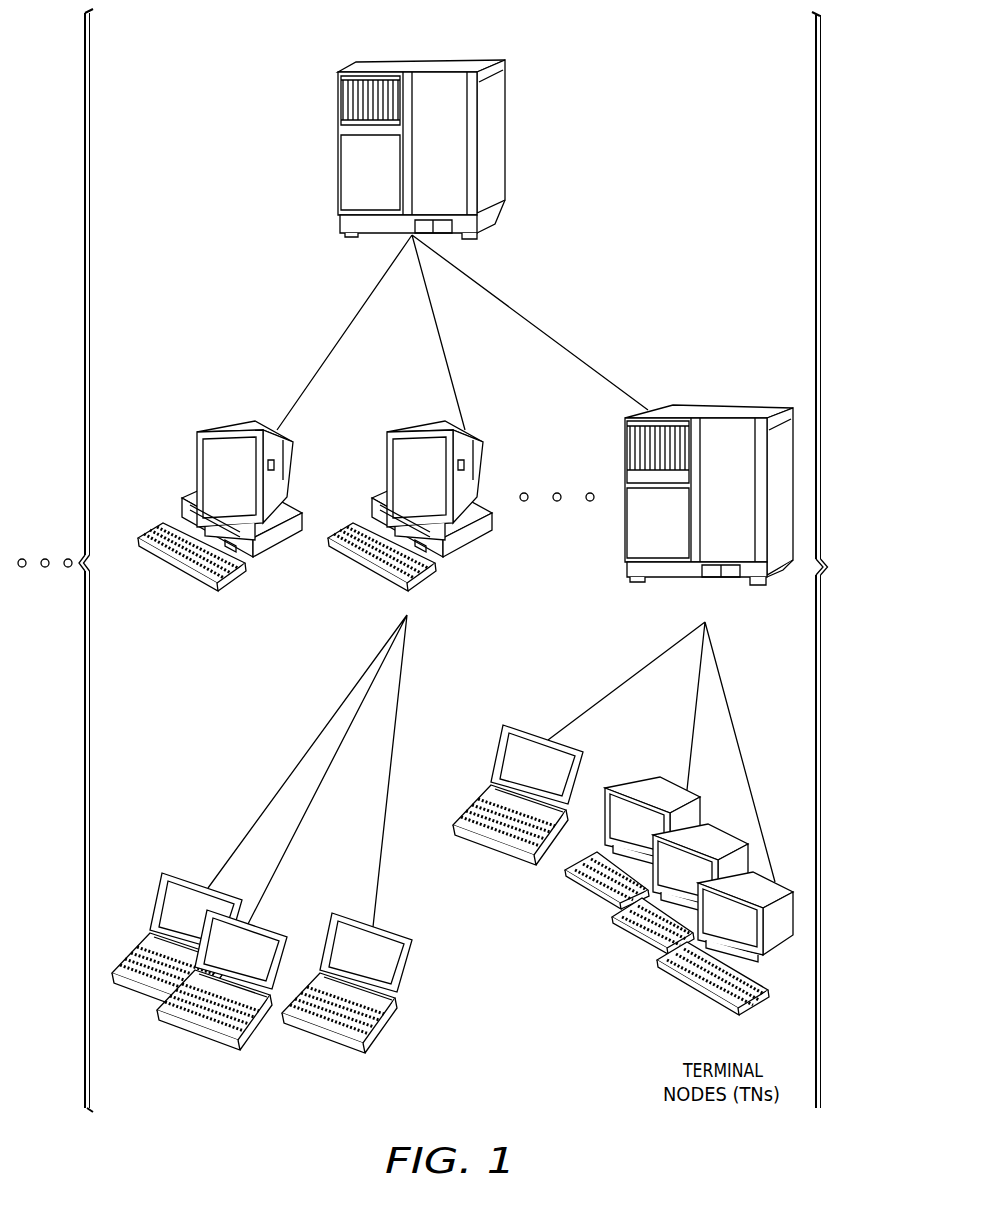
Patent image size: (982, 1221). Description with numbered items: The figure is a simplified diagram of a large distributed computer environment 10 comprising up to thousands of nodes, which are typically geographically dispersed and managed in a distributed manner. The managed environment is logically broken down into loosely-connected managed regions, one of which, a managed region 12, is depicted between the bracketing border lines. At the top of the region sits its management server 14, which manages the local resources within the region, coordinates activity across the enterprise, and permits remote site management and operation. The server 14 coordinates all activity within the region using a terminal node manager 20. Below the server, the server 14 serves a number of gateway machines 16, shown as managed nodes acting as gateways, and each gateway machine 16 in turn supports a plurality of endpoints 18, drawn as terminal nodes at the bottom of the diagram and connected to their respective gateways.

The distributed computer environment 10 is at (201, 775).
The managed region 12 is at (838, 225).
The management server 14 is at (507, 69).
The gateway machine 16 is at (196, 457).
The endpoint 18 is at (425, 873).
The terminal node manager 20 is at (295, 54).